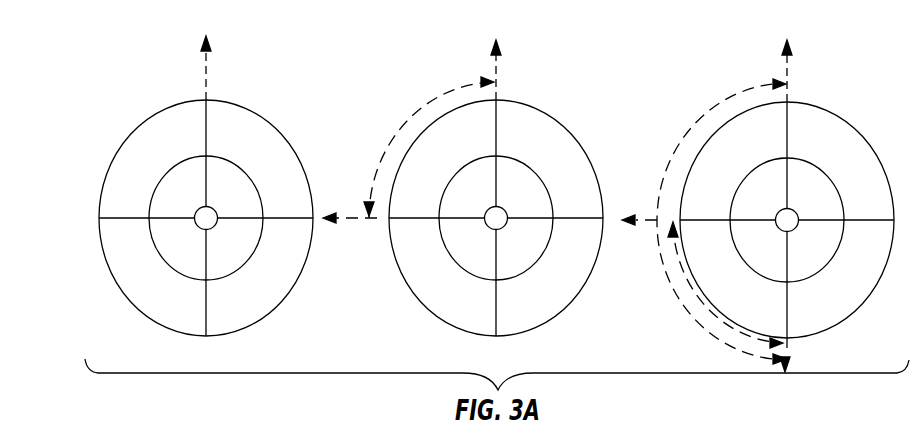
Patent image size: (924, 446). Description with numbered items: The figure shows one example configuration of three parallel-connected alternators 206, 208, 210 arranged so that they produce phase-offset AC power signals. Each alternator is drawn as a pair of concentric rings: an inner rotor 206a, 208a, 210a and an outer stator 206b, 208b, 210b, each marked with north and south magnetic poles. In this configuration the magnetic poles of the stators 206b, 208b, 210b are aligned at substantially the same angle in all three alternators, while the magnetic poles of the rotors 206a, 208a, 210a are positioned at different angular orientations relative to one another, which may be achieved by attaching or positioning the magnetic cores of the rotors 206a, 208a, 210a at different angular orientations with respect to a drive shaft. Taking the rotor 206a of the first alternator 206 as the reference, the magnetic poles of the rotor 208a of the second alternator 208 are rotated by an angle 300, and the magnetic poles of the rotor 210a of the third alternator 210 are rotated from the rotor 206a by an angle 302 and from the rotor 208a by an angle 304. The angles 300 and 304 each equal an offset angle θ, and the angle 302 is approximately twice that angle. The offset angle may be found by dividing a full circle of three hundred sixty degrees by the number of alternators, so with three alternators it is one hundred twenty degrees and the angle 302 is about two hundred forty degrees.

The alternator 206 is at (189, 202).
The rotor 206a is at (232, 276).
The stator 206b is at (283, 135).
The alternator 208 is at (501, 196).
The rotor 208a is at (520, 278).
The stator 208b is at (573, 135).
The alternator 210 is at (792, 197).
The rotor 210a is at (810, 281).
The stator 210b is at (863, 135).
The angle 300 is at (422, 105).
The angle 302 is at (708, 328).
The angle 304 is at (730, 323).